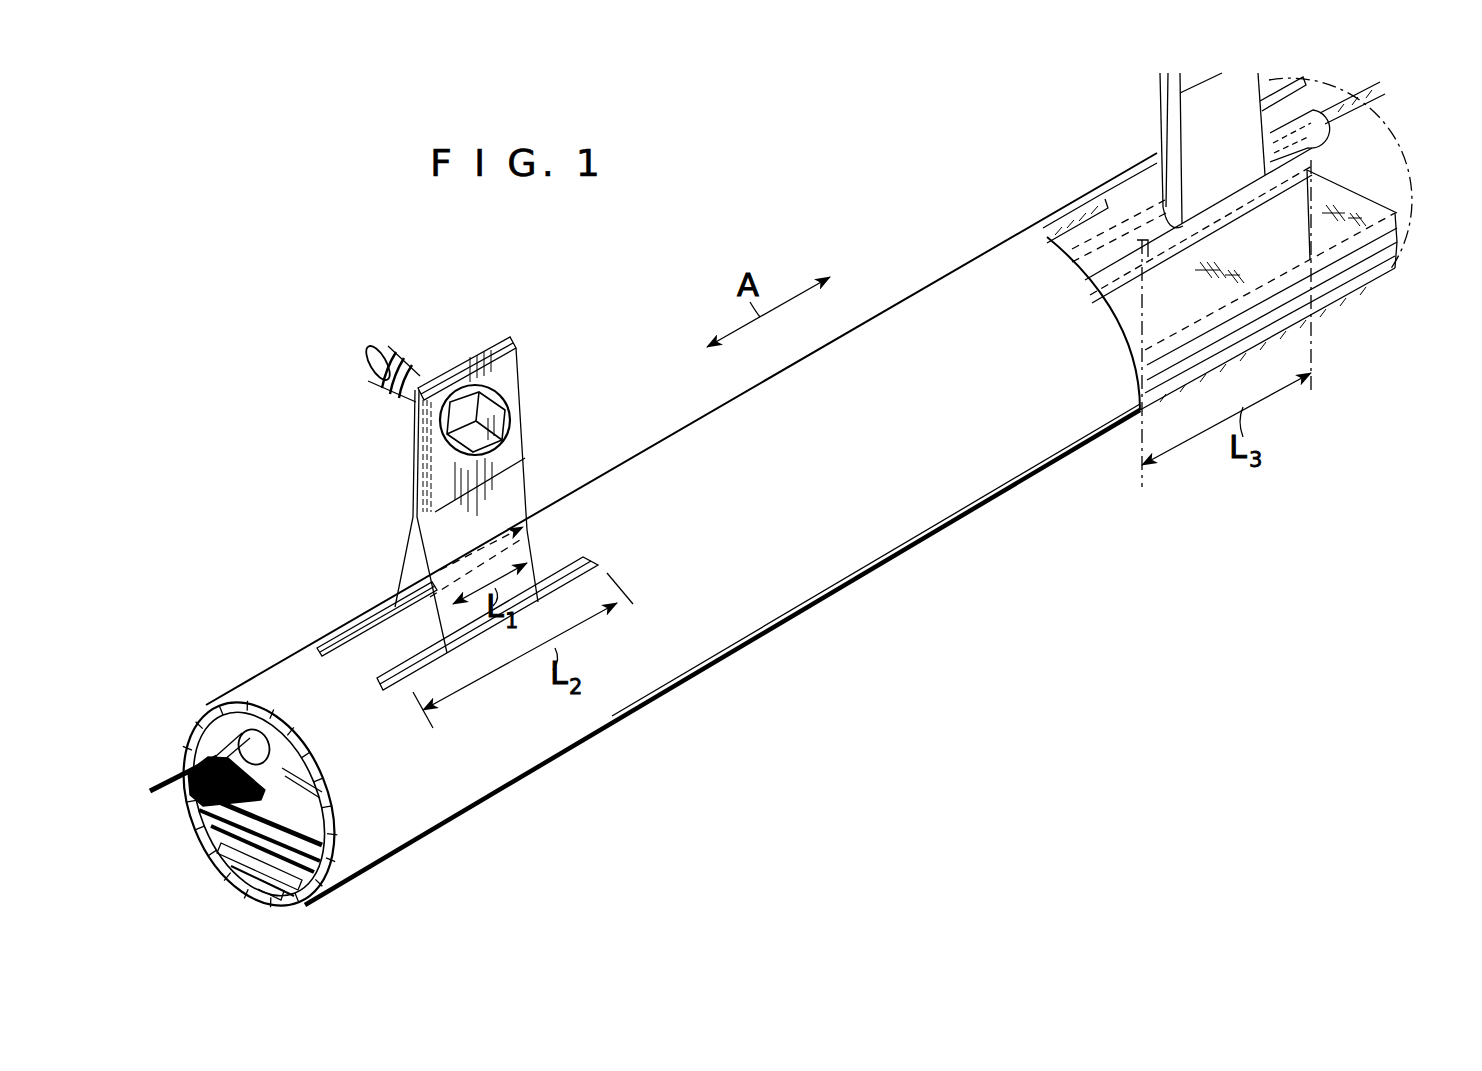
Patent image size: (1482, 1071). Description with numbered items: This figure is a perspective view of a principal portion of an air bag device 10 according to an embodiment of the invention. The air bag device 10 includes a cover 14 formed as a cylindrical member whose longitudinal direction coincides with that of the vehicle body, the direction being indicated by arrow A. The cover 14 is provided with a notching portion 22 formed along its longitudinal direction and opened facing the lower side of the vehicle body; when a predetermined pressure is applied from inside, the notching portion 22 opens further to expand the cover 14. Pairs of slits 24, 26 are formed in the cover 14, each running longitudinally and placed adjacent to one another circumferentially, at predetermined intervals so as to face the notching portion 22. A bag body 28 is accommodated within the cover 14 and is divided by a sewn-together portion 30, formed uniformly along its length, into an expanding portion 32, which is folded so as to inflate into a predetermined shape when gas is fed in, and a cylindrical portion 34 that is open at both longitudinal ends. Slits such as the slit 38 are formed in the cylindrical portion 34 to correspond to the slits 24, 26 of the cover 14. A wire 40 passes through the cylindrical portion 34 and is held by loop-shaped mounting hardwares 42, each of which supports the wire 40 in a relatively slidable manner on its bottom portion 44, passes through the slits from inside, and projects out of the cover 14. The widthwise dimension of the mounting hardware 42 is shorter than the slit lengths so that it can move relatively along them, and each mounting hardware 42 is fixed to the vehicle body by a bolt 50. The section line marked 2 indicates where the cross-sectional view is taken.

The section line of FIG. 2 is at (279, 526).
The air bag device 10 is at (881, 240).
The cover 14 is at (867, 557).
The notching portion 22 is at (258, 887).
The slit 24 is at (352, 619).
The slit 26 is at (578, 562).
The bag body 28 is at (1360, 177).
The sewn-together portion 30 is at (307, 783).
The expanding portion 32 is at (308, 813).
The cylindrical portion 34 is at (277, 747).
The slit 38 is at (1312, 130).
The wire 40 is at (213, 752).
The mounting hardware 42 is at (505, 362).
The bottom portion 44 is at (1183, 222).
The bolt 50 is at (500, 428).